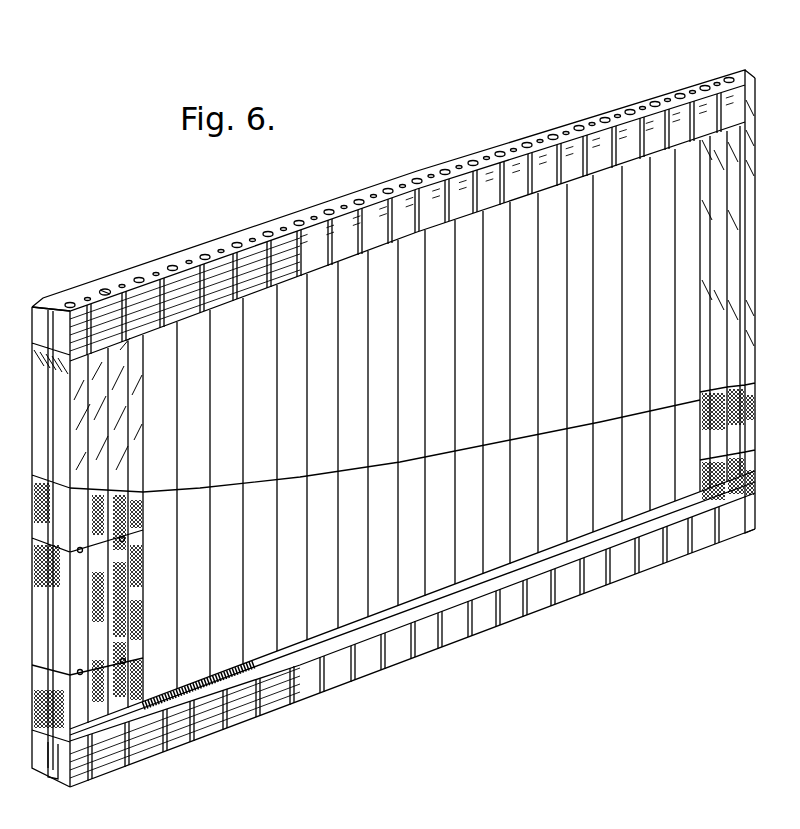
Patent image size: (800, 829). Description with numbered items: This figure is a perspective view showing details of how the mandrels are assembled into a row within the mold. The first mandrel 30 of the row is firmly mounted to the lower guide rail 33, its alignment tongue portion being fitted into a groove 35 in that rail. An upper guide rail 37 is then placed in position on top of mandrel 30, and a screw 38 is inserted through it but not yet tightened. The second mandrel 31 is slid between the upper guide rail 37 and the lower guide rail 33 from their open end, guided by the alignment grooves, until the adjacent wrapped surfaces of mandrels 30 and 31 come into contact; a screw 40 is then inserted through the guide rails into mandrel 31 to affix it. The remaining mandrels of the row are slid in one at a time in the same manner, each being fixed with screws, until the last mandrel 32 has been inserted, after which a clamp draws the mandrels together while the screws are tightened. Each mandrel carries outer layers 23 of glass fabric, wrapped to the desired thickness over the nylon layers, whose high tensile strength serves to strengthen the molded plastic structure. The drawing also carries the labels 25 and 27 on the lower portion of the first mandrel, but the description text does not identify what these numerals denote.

The layers of glass fabric 23 is at (138, 560).
The lower post section 25 is at (71, 671).
The post base 27 is at (35, 762).
The mandrel 30 is at (50, 431).
The mandrel 31 is at (134, 368).
The mandrel 32 is at (748, 156).
The lower guide rail 33 is at (310, 698).
The groove 35 is at (205, 693).
The upper guide rail 37 is at (306, 207).
The screw 38 is at (66, 300).
The screw 40 is at (106, 287).